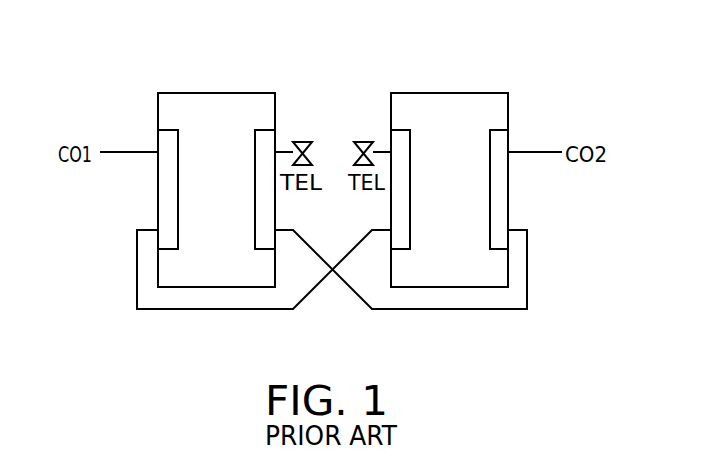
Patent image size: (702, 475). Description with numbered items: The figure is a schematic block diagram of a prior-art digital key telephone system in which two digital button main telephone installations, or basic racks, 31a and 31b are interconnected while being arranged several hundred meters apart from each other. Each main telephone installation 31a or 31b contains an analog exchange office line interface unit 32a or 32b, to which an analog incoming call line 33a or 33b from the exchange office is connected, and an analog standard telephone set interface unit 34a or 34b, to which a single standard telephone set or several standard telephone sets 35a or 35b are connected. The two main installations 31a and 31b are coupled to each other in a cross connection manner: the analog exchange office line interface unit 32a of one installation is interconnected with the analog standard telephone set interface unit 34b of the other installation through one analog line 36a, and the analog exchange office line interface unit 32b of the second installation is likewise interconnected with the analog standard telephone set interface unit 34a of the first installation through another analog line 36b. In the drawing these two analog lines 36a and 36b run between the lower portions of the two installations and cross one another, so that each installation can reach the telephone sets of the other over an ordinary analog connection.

The digital button main telephone installation 31a is at (217, 92).
The digital button main telephone installation 31b is at (451, 92).
The analog exchange office line interface unit 32a is at (175, 151).
The analog exchange office line interface unit 32b is at (490, 143).
The analog incoming call line 33a is at (119, 150).
The analog incoming call line 33b is at (538, 150).
The analog standard telephone set interface unit 34a is at (256, 144).
The analog standard telephone set interface unit 34b is at (408, 152).
The standard telephone set 35a is at (302, 140).
The standard telephone set 35b is at (363, 140).
The analog line 36a is at (263, 311).
The analog line 36b is at (303, 240).